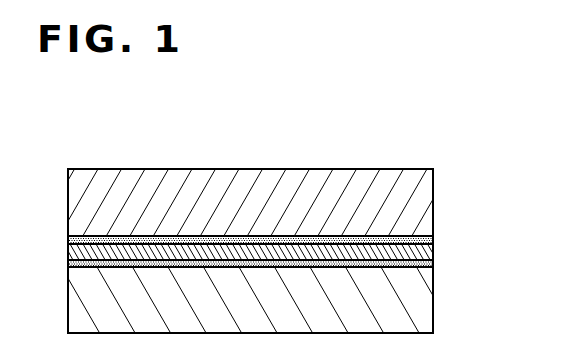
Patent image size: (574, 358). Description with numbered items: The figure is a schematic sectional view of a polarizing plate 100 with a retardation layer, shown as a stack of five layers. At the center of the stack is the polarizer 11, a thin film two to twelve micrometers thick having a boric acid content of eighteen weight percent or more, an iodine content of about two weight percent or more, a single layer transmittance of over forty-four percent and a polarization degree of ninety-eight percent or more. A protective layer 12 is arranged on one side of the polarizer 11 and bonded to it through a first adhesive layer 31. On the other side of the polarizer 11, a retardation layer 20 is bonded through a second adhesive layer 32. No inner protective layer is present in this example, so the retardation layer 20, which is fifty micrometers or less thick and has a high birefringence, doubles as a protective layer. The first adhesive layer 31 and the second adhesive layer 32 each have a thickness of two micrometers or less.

The polarizing plate with a retardation layer 100 is at (460, 117).
The protective layer 12 is at (422, 205).
The first adhesive layer 31 is at (422, 240).
The polarizer 11 is at (422, 250).
The second adhesive layer 32 is at (433, 265).
The retardation layer 20 is at (422, 310).